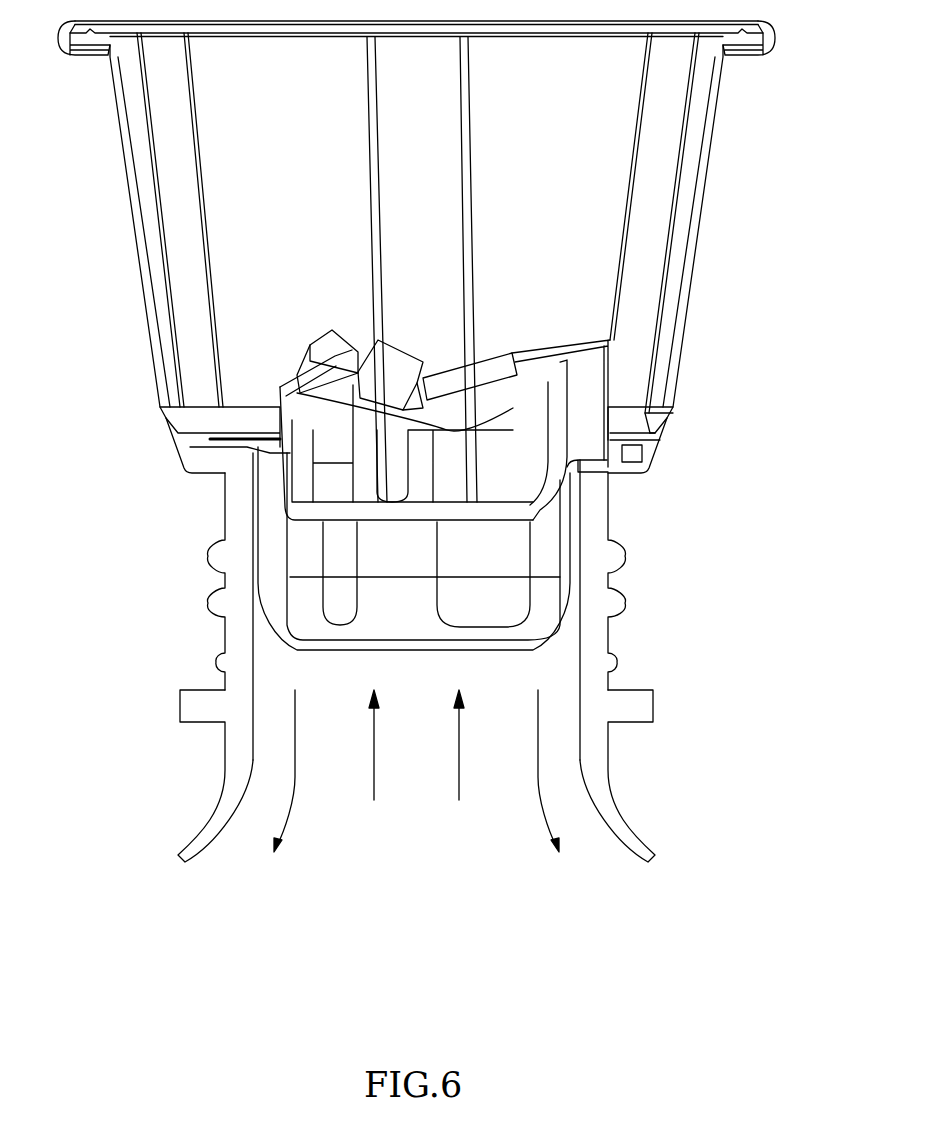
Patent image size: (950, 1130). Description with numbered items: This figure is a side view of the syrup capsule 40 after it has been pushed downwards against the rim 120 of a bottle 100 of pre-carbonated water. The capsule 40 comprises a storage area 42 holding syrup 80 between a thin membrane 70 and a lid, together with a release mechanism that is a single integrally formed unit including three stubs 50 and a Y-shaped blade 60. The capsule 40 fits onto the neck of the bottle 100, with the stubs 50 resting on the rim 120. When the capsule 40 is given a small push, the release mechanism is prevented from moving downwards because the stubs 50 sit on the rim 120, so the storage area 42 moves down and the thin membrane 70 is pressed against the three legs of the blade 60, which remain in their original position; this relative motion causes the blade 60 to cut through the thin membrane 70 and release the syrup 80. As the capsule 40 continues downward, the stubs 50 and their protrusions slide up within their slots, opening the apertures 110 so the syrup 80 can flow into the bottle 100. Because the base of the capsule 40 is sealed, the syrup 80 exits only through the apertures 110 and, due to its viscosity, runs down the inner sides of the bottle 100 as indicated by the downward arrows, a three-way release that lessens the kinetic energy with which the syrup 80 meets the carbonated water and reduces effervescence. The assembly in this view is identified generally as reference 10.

The valve assembly 10 is at (570, 492).
The capsule 40 is at (440, 261).
The storage area 42 is at (240, 192).
The stubs 50 is at (585, 422).
The Y-shaped blade 60 is at (521, 401).
The thin membrane 70 is at (655, 412).
The syrup 80 is at (592, 207).
The bottle 100 is at (670, 766).
The apertures 110 is at (343, 595).
The rim 120 is at (247, 458).